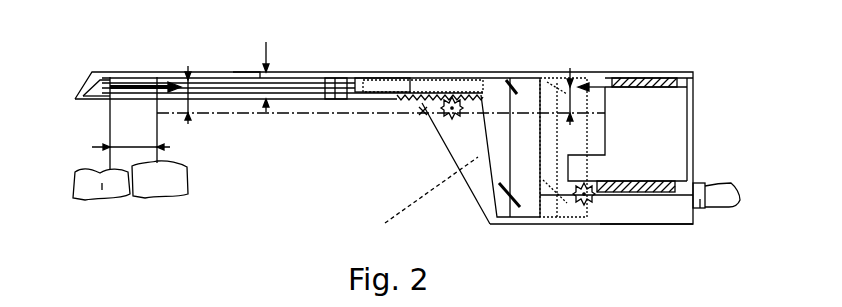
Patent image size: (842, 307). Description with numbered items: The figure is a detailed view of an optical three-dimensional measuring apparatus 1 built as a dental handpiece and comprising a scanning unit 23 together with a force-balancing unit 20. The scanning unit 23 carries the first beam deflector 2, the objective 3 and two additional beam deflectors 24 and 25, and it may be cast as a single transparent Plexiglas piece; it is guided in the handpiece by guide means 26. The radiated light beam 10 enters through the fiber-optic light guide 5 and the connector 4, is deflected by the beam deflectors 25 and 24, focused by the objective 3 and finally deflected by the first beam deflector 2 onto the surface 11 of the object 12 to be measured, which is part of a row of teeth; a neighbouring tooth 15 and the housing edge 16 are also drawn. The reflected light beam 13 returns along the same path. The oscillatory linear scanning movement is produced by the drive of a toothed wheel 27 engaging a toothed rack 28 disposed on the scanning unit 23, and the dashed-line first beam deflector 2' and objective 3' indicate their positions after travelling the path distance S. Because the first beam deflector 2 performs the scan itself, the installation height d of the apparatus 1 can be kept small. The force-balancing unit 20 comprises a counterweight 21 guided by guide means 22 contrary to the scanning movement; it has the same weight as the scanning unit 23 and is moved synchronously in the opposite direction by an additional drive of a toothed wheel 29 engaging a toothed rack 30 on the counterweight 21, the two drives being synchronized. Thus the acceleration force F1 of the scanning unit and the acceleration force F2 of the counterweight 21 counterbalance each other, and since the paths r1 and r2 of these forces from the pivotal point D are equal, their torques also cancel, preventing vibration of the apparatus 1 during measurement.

The optical 3D measuring apparatus 1 is at (493, 1).
The first beam deflector 2 is at (141, 86).
The first beam deflector (displaced position) 2' is at (159, 83).
The objective 3 is at (382, 55).
The objective (displaced position) 3' is at (423, 55).
The connector 4 is at (702, 202).
The fiber-optic light guide 5 is at (720, 187).
The radiated light beam 10 is at (667, 197).
The surface 11 is at (80, 167).
The object 12 is at (102, 190).
The reflected light beam 13 is at (637, 197).
The adjacent tooth 15 is at (160, 163).
The guide surface 16 is at (470, 188).
The force-balancing unit 20 is at (687, 79).
The counterweight 21 is at (678, 122).
The guide means 22 is at (643, 78).
The scanning unit 23 is at (292, 77).
The beam deflector 24 is at (515, 72).
The beam deflector 25 is at (516, 205).
The guide means 26 is at (233, 72).
The toothed wheel 27 is at (440, 117).
The toothed rack 28 is at (480, 97).
The toothed wheel 29 is at (578, 200).
The toothed rack 30 is at (562, 200).
The pivotal point D is at (422, 114).
The path distance S is at (131, 138).
The path r1 is at (195, 105).
The path r2 is at (575, 111).
The installation height d is at (260, 89).
The acceleration force F1 is at (168, 80).
The acceleration force F2 is at (617, 5).